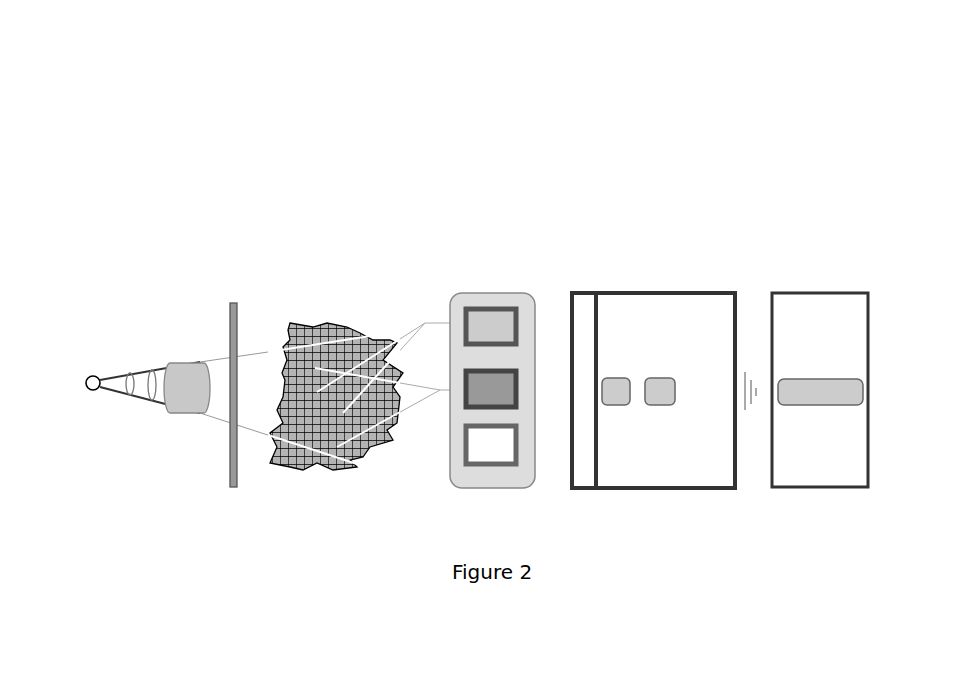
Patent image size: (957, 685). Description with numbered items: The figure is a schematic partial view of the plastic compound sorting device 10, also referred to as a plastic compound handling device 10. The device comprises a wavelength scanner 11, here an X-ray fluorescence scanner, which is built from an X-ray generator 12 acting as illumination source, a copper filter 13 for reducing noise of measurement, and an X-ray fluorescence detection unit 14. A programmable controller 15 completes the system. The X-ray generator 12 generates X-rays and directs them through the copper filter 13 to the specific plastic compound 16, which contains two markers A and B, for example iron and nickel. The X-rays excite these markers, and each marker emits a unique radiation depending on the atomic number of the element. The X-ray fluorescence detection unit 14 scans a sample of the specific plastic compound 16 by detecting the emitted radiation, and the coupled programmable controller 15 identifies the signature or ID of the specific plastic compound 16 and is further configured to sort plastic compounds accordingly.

The plastic compound sorting device 10 is at (151, 124).
The wavelength scanner 11 is at (349, 260).
The X-ray generator 12 is at (131, 350).
The copper filter 13 is at (221, 288).
The X-ray fluorescence detection unit 14 is at (490, 277).
The programmable controller 15 is at (671, 278).
The specific plastic compound 16 is at (323, 346).